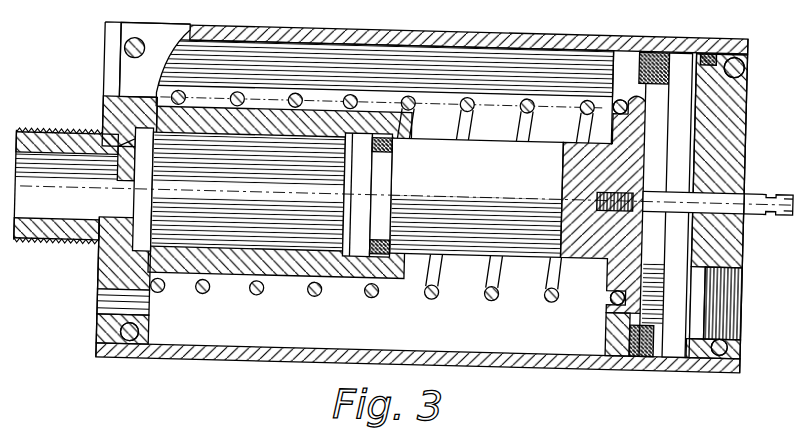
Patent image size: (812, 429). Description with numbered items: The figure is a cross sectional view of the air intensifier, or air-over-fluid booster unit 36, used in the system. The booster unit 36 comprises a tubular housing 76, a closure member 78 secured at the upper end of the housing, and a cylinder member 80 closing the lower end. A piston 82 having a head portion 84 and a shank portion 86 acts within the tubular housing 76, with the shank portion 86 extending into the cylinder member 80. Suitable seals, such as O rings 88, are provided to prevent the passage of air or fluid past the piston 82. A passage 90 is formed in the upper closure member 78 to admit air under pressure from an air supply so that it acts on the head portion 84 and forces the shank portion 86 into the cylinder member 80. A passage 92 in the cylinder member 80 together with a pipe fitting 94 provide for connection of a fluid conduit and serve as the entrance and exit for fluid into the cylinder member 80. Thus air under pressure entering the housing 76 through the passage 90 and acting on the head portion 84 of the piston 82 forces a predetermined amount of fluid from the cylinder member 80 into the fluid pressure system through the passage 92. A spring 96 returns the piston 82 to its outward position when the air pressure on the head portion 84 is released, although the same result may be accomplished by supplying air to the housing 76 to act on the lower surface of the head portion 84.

The air-over-fluid booster unit 36 is at (199, 368).
The tubular housing 76 is at (566, 366).
The closure member 78 is at (727, 83).
The cylinder member 80 is at (101, 105).
The piston 82 is at (533, 262).
The head portion 84 is at (666, 352).
The shank portion 86 is at (476, 244).
The O rings 88 is at (371, 256).
The passage 90 is at (730, 330).
The passage 92 is at (77, 229).
The pipe fitting 94 is at (42, 253).
The spring 96 is at (259, 300).